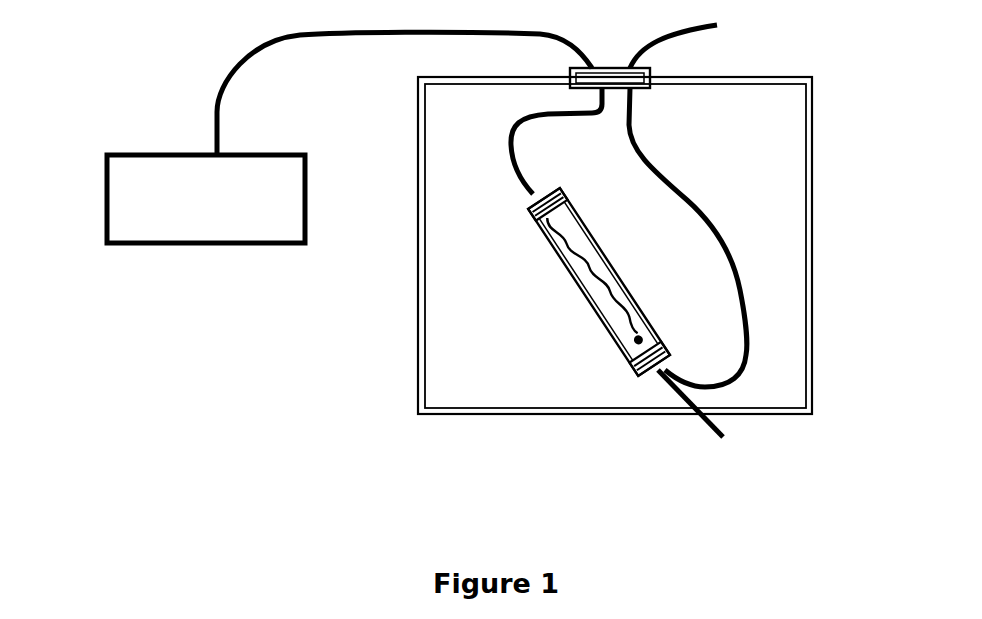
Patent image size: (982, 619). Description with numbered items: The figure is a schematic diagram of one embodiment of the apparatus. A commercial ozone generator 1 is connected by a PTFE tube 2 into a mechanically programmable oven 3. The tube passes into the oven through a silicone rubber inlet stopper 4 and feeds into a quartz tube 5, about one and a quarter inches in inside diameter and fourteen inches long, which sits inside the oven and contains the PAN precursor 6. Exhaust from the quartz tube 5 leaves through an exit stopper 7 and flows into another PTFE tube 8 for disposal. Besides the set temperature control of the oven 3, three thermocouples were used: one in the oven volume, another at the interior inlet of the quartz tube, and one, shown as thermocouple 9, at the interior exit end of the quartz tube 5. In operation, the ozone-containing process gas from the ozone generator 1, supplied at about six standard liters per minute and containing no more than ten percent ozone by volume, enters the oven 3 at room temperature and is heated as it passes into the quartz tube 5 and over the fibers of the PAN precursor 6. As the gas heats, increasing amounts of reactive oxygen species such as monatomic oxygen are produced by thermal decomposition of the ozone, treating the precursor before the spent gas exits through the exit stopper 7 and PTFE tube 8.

The ozone generator 1 is at (105, 214).
The PTFE tube 2 is at (223, 67).
The mechanically programmable oven 3 is at (816, 201).
The silicone rubber inlet stopper 4 is at (513, 213).
The quartz tube 5 is at (564, 276).
The PAN precursor 6 is at (623, 315).
The exit stopper 7 is at (656, 378).
The PTFE tube 8 is at (698, 34).
The thermocouple 9 is at (650, 342).